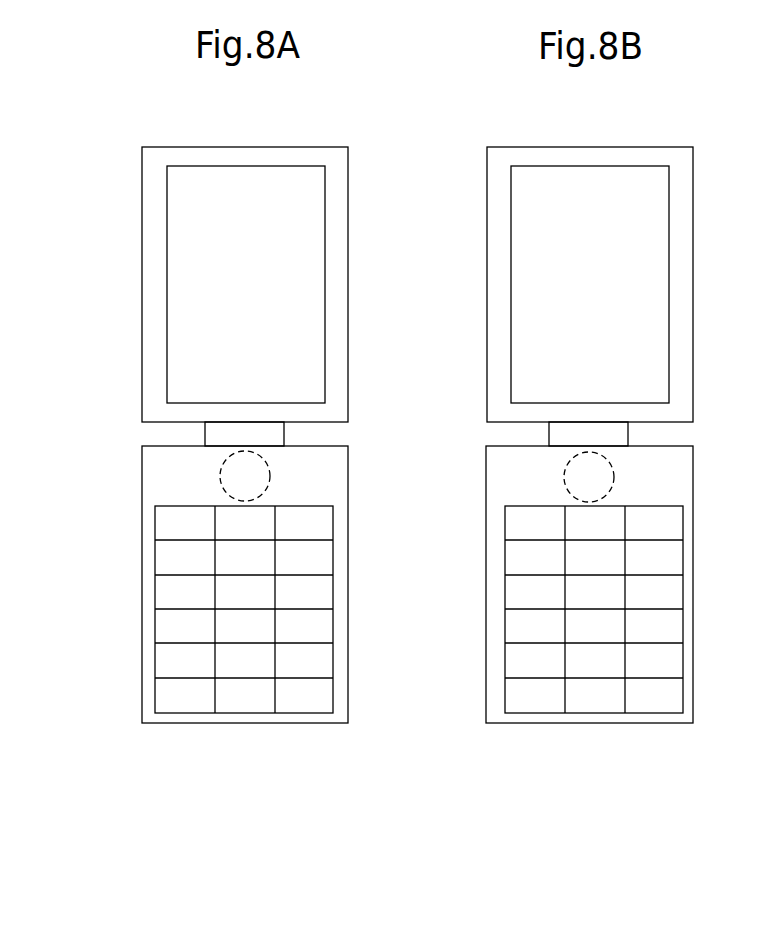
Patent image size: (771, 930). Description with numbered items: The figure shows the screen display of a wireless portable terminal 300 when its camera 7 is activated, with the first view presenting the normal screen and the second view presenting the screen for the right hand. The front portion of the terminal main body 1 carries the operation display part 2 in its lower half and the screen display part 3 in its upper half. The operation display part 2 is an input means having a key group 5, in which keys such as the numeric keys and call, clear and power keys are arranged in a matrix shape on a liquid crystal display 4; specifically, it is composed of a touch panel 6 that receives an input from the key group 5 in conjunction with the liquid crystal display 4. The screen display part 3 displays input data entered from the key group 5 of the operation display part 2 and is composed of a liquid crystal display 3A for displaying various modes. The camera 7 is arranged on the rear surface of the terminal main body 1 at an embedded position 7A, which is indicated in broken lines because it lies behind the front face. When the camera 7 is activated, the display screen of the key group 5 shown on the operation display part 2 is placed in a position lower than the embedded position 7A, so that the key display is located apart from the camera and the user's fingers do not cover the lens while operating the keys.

In FIG. 8A, the terminal main body 1 is at (196, 157).
In FIG. 8B, the terminal main body 1 is at (590, 262).
In FIG. 8A, the screen display part 3 is at (178, 215).
In FIG. 8B, the screen display part 3 is at (554, 284).
In FIG. 8A, the liquid crystal display 3A is at (178, 255).
In FIG. 8B, the liquid crystal display 3A is at (530, 267).
In FIG. 8A, the operation display part 2 is at (142, 518).
In FIG. 8B, the operation display part 2 is at (547, 584).
In FIG. 8A, the embedded position 7A is at (152, 462).
In FIG. 8B, the embedded position 7A is at (588, 446).
In FIG. 8A, the camera 7 is at (272, 479).
In FIG. 8B, the camera 7 is at (667, 482).
In FIG. 8A, the liquid crystal display 4 is at (152, 563).
In FIG. 8B, the liquid crystal display 4 is at (545, 609).
In FIG. 8A, the key group 5 is at (165, 624).
In FIG. 8B, the key group 5 is at (554, 647).
In FIG. 8A, the touch panel 6 is at (148, 697).
In FIG. 8B, the touch panel 6 is at (534, 702).
In FIG. 8A, the wireless portable terminal 300 is at (242, 745).
In FIG. 8B, the wireless portable terminal 300 is at (582, 788).